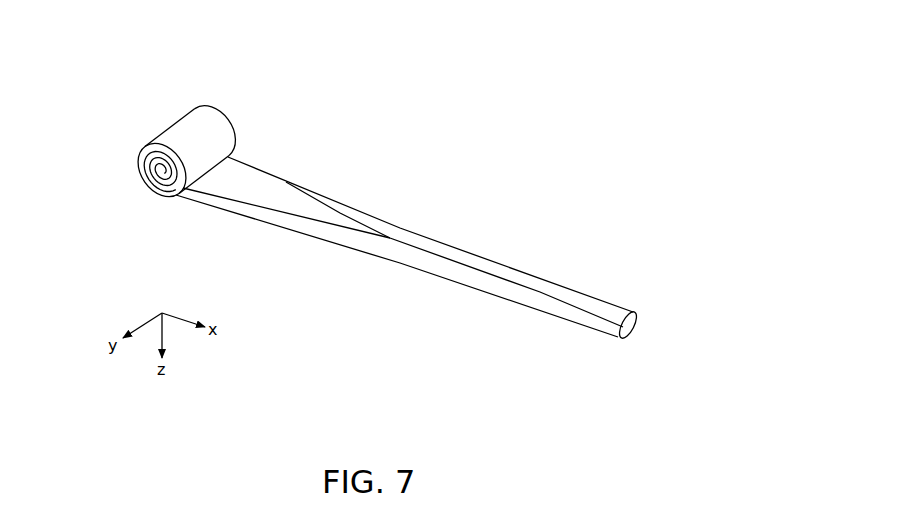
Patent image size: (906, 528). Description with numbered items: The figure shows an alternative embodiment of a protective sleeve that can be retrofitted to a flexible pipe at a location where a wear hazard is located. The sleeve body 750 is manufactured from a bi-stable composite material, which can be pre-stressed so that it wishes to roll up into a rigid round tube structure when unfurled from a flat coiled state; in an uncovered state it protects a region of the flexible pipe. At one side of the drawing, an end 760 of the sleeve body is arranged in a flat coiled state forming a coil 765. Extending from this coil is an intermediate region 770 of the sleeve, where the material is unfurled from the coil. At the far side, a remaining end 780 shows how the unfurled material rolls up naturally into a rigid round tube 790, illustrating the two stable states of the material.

The sleeve body 750 is at (417, 202).
The end of the sleeve body 760 is at (242, 103).
The coil 765 is at (139, 189).
The intermediate region 770 is at (292, 163).
The remaining end 780 is at (403, 208).
The rigid round tube 790 is at (570, 318).